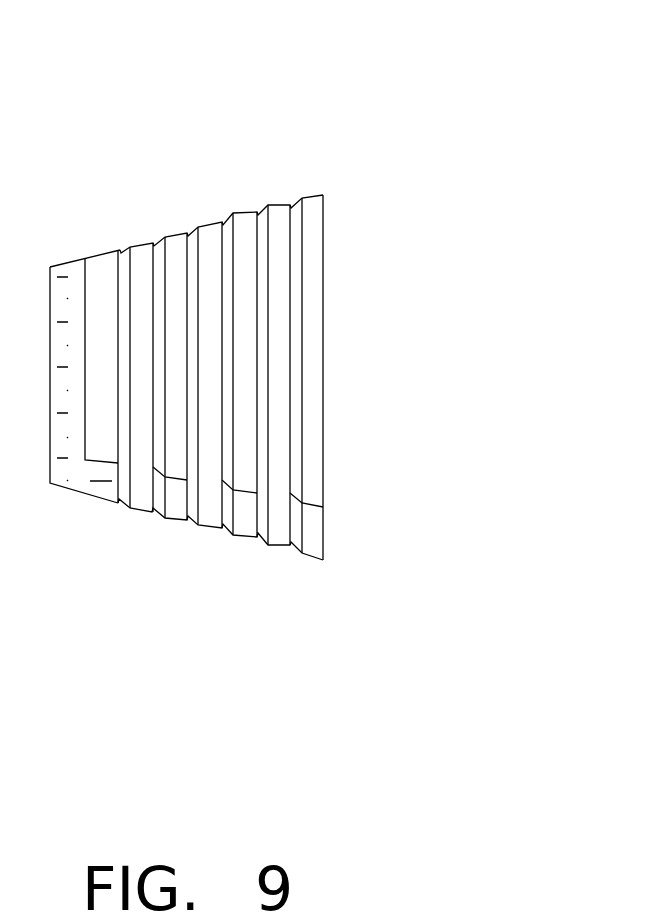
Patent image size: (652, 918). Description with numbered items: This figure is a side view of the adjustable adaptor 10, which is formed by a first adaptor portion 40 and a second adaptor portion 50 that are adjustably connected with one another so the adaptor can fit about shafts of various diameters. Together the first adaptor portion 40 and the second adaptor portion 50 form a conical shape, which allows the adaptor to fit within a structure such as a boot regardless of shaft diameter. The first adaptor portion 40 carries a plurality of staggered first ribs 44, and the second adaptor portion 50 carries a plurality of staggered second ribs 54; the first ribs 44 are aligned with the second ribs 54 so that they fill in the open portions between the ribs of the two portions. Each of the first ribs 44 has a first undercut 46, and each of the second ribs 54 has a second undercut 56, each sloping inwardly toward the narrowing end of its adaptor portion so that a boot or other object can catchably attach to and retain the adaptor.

The adjustable adaptor 10 is at (453, 132).
The first adaptor portion 40 is at (210, 563).
The second adaptor portion 50 is at (177, 196).
The second undercut 56 is at (158, 290).
The second ribs 54 is at (178, 333).
The first undercut 46 is at (262, 413).
The first ribs 44 is at (277, 448).